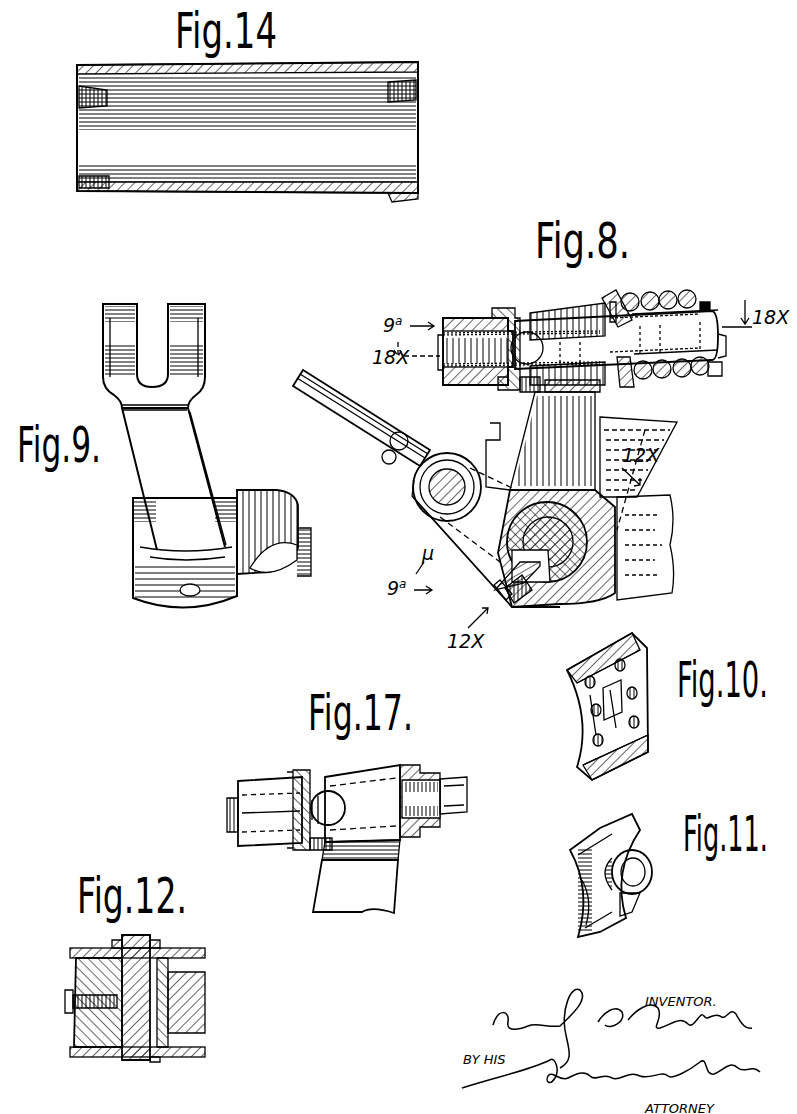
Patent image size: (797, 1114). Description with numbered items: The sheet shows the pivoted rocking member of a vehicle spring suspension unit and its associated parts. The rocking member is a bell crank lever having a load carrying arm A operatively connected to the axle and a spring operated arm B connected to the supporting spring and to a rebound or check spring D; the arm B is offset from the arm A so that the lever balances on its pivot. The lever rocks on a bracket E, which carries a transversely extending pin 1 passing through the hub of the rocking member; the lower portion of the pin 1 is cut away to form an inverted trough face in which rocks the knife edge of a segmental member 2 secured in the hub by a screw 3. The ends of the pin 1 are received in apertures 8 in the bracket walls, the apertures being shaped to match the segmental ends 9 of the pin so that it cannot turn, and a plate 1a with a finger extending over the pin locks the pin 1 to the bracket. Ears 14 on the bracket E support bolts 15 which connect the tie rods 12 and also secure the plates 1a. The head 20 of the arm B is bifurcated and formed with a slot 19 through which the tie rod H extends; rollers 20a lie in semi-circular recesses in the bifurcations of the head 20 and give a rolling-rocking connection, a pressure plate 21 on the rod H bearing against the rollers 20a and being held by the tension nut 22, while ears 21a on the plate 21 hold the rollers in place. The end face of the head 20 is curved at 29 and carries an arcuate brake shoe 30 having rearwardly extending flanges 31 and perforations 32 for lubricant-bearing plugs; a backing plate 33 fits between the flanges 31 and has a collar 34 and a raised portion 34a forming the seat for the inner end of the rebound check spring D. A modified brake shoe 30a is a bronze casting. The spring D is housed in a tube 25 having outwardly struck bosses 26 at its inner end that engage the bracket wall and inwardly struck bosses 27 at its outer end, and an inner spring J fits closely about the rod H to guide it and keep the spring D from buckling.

In FIG. 14, the tube 25 is at (372, 66).
In FIG. 14, the outwardly struck bosses 26 is at (402, 198).
In FIG. 14, the inwardly struck bosses 27 is at (79, 179).
In FIG. 9, the slot 19 is at (157, 323).
In FIG. 8, the slot 19 is at (562, 320).
In FIG. 9, the head 20 is at (190, 387).
In FIG. 8, the head 20 is at (548, 384).
In FIG. 17, the head 20 is at (362, 803).
In FIG. 8, the rollers 20a is at (528, 333).
In FIG. 17, the rollers 20a is at (335, 792).
In FIG. 8, the pressure plate 21 is at (500, 312).
In FIG. 17, the pressure plate 21 is at (294, 772).
In FIG. 8, the ears 21a is at (522, 382).
In FIG. 17, the ears 21a is at (318, 850).
In FIG. 8, the tension nut 22 is at (456, 385).
In FIG. 17, the tension nut 22 is at (250, 790).
In FIG. 8, the curved face 29 is at (620, 388).
In FIG. 8, the brake shoe 30 is at (614, 300).
In FIG. 10, the brake shoe 30 is at (630, 672).
In FIG. 17, the brake shoe 30a is at (416, 770).
In FIG. 8, the flanges 31 is at (630, 385).
In FIG. 10, the flanges 31 is at (600, 658).
In FIG. 10, the perforations 32 is at (592, 726).
In FIG. 8, the backing plate 33 is at (646, 376).
In FIG. 11, the backing plate 33 is at (645, 897).
In FIG. 17, the backing plate 33 is at (418, 840).
In FIG. 8, the collar 34 is at (660, 300).
In FIG. 11, the collar 34 is at (653, 873).
In FIG. 11, the raised portion 34a is at (610, 836).
In FIG. 8, the tie rods 12 is at (356, 432).
In FIG. 8, the ears 14 is at (428, 500).
In FIG. 8, the bolts 15 is at (455, 470).
In FIG. 8, the pin 1 is at (560, 604).
In FIG. 12, the pin 1 is at (134, 1060).
In FIG. 12, the plate 1a is at (112, 943).
In FIG. 8, the segmental member 2 is at (525, 606).
In FIG. 12, the segmental member 2 is at (97, 1058).
In FIG. 8, the screw 3 is at (496, 592).
In FIG. 12, the screw 3 is at (65, 1003).
In FIG. 12, the apertures 8 is at (166, 948).
In FIG. 12, the segmental ends 9 is at (138, 938).
In FIG. 9, the load carrying arm A is at (280, 521).
In FIG. 8, the load carrying arm A is at (660, 552).
In FIG. 9, the spring operated arm B is at (208, 470).
In FIG. 8, the spring operated arm B is at (540, 441).
In FIG. 17, the spring operated arm B is at (394, 902).
In FIG. 8, the rebound check spring D is at (692, 372).
In FIG. 8, the bracket E is at (674, 426).
In FIG. 12, the bracket E is at (206, 953).
In FIG. 17, the tie rod H is at (470, 793).
In FIG. 8, the inner spring J is at (718, 355).